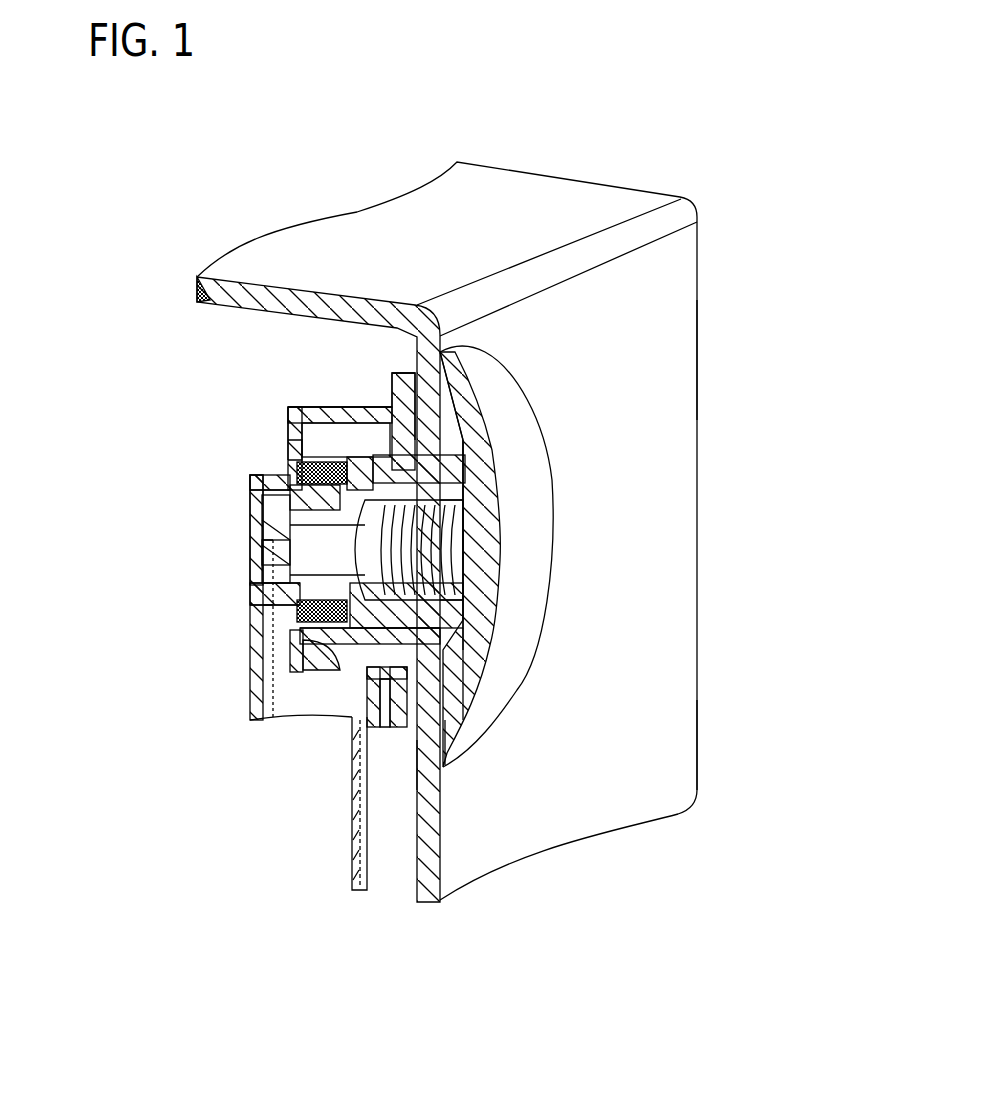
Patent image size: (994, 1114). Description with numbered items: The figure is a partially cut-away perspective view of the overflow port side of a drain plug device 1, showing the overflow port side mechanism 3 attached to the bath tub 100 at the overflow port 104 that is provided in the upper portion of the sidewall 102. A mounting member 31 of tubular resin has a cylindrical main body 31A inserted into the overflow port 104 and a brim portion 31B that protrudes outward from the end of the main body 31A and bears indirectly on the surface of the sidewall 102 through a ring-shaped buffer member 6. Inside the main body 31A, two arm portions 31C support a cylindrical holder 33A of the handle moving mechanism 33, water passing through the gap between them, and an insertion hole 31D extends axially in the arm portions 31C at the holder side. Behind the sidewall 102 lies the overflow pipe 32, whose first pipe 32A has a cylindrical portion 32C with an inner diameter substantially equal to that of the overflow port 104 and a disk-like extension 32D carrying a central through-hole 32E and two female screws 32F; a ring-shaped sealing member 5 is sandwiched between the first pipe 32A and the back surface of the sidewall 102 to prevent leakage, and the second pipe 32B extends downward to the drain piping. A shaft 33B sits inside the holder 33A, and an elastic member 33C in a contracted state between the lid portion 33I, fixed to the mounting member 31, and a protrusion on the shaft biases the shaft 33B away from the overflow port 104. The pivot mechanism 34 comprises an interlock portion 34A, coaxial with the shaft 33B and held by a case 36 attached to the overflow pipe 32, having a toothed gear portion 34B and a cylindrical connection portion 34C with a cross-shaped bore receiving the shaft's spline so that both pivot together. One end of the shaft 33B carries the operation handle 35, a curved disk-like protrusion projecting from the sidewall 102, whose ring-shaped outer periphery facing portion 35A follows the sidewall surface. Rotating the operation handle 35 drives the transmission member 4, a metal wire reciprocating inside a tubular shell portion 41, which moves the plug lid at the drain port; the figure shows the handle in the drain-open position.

The drain plug device 1 is at (800, 170).
The bath tub 100 is at (683, 197).
The sidewall 102 is at (686, 363).
The overflow port 104 is at (450, 657).
The overflow port side mechanism 3 is at (640, 360).
The operation handle 35 is at (518, 373).
The outer periphery facing portion 35A is at (415, 762).
The sealing member 5 is at (405, 392).
The buffer member 6 is at (453, 753).
The transmission member 4 is at (352, 800).
The tubular shell portion 41 is at (352, 860).
The mounting member 31 is at (364, 398).
The main body 31A is at (394, 397).
The brim portion 31B is at (467, 423).
The arm portions 31C is at (470, 488).
The insertion hole 31D is at (470, 538).
The overflow pipe 32 is at (287, 430).
The first pipe 32A is at (272, 422).
The second pipe 32B is at (252, 655).
The cylindrical portion 32C is at (330, 398).
The extension 32D is at (288, 447).
The through-hole 32E is at (252, 523).
The female screws 32F is at (252, 478).
The handle moving mechanism 33 is at (252, 583).
The holder 33A is at (500, 545).
The shaft 33B is at (445, 520).
The elastic member 33C is at (465, 608).
The lid portion 33I is at (455, 652).
The pivot mechanism 34 is at (250, 500).
The interlock portion 34A is at (252, 567).
The gear portion 34B is at (250, 490).
The connection portion 34C is at (175, 595).
The case 36 is at (252, 547).